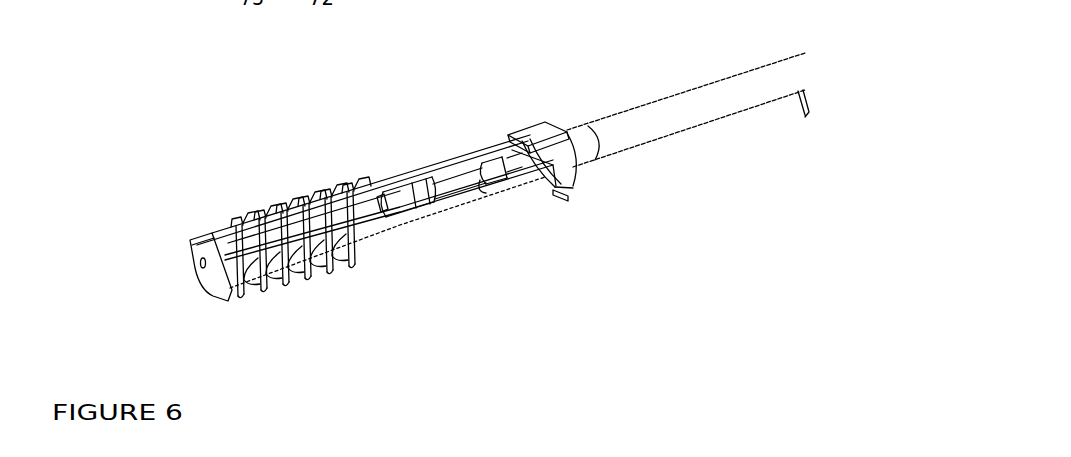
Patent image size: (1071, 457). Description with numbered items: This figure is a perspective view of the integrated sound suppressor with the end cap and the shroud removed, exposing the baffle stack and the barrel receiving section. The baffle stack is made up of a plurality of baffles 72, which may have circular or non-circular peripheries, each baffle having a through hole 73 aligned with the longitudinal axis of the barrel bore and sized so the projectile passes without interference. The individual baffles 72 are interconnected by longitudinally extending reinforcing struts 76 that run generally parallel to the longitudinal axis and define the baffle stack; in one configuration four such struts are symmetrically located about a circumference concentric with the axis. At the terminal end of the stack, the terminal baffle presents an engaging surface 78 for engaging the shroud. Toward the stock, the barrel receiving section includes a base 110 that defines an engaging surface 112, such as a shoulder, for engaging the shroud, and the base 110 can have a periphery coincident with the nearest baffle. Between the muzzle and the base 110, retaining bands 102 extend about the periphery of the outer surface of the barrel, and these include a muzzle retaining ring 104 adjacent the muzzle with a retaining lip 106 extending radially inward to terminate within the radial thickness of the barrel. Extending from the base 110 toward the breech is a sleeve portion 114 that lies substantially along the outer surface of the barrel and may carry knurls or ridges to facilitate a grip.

The baffle 72 is at (256, 215).
The through hole 73 is at (198, 268).
The reinforcing strut 76 is at (524, 178).
The engaging surface 78 is at (190, 241).
The retaining band 102 is at (478, 190).
The muzzle retaining ring 104 is at (405, 203).
The retaining lip 106 is at (383, 204).
The base 110 is at (523, 126).
The engaging surface 112 is at (572, 134).
The sleeve portion 114 is at (708, 108).